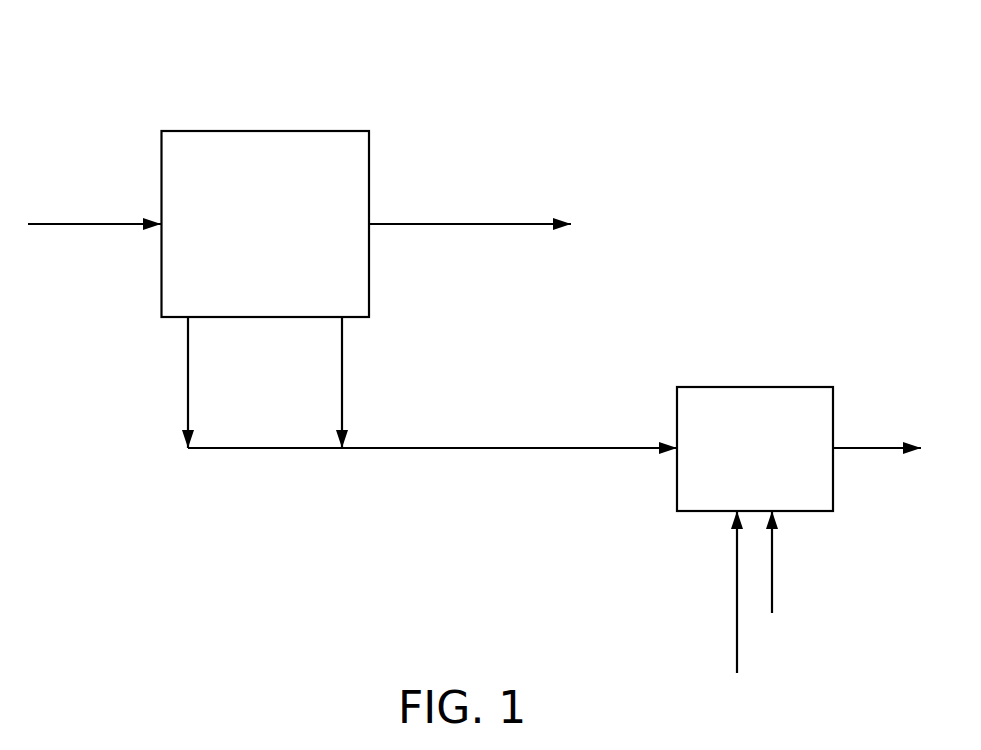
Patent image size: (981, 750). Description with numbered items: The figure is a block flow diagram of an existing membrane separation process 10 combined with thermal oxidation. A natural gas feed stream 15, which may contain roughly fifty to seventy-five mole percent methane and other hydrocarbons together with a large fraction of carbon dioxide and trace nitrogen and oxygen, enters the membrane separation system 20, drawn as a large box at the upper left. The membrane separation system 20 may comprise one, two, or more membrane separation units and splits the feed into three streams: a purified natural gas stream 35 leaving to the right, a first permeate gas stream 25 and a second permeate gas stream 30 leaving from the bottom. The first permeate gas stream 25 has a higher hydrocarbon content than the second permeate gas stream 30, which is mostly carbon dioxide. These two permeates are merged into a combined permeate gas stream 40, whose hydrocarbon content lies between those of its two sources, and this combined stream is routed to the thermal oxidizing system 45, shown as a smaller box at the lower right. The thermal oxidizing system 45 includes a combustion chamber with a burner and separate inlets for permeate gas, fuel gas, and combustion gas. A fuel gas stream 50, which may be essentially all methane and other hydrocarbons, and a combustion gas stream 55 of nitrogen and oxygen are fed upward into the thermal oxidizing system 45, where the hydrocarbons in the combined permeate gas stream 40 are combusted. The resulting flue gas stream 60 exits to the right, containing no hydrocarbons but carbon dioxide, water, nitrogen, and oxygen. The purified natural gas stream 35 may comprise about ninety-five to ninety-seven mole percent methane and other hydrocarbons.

The membrane separation process 10 is at (132, 57).
The natural gas feed stream 15 is at (96, 222).
The membrane separation system 20 is at (266, 130).
The first permeate gas stream 25 is at (187, 382).
The second permeate gas stream 30 is at (343, 381).
The purified natural gas stream 35 is at (470, 222).
The combined permeate gas stream 40 is at (545, 447).
The thermal oxidizing system 45 is at (756, 386).
The fuel gas stream 50 is at (736, 591).
The combustion gas stream 55 is at (773, 561).
The flue gas stream 60 is at (880, 447).